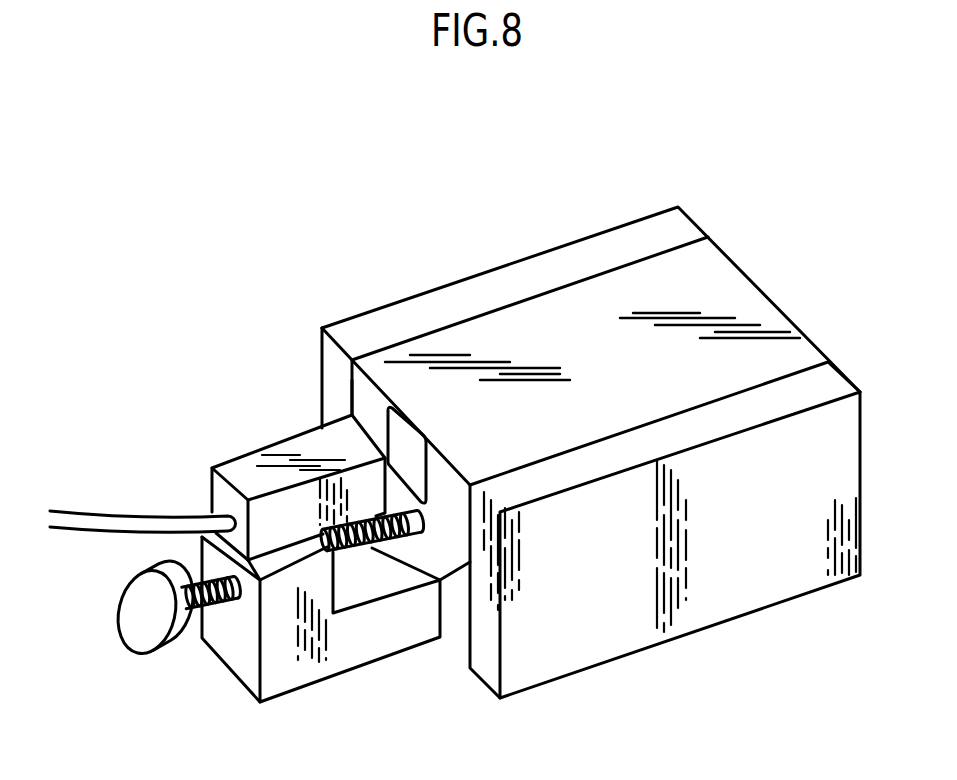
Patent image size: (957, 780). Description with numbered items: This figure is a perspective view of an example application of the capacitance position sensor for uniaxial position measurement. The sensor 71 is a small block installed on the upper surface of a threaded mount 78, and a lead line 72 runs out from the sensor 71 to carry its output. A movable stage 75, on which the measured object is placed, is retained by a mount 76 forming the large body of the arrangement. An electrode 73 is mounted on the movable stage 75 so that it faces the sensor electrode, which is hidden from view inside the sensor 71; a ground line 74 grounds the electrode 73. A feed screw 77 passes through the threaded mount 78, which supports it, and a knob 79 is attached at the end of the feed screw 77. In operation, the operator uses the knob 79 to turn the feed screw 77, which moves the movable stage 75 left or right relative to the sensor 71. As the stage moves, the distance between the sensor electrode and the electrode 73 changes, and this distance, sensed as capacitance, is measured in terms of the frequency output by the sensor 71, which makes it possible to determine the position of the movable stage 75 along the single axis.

The sensor 71 is at (245, 474).
The lead line 72 is at (96, 514).
The electrode 73 is at (410, 440).
The ground line 74 is at (358, 418).
The movable stage 75 is at (750, 293).
The mount 76 is at (757, 585).
The feed screw 77 is at (373, 555).
The threaded mount 78 is at (352, 650).
The knob 79 is at (174, 650).